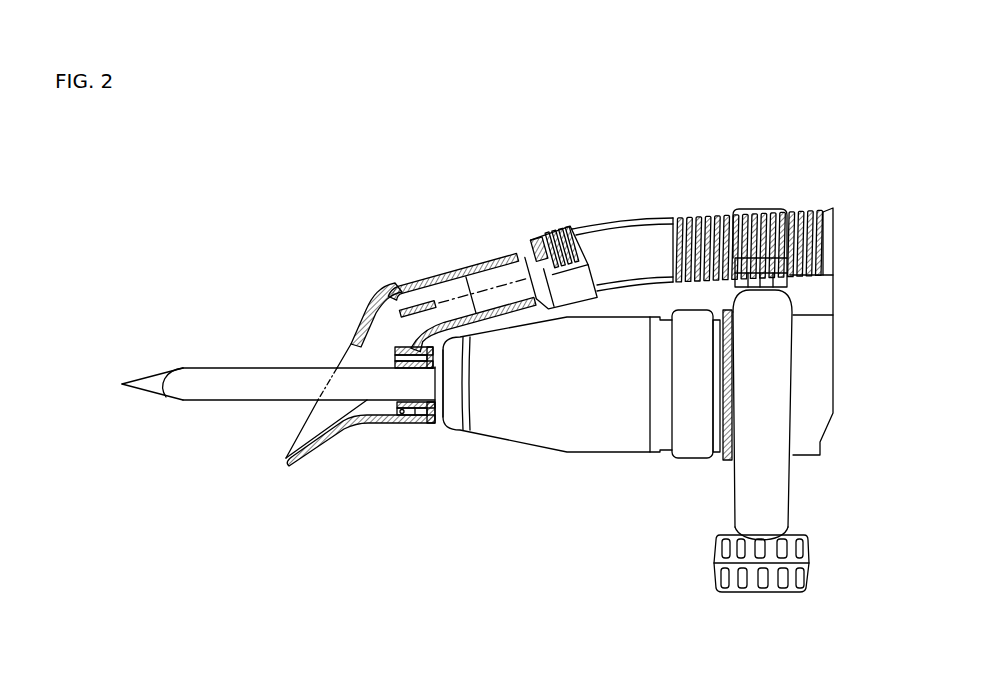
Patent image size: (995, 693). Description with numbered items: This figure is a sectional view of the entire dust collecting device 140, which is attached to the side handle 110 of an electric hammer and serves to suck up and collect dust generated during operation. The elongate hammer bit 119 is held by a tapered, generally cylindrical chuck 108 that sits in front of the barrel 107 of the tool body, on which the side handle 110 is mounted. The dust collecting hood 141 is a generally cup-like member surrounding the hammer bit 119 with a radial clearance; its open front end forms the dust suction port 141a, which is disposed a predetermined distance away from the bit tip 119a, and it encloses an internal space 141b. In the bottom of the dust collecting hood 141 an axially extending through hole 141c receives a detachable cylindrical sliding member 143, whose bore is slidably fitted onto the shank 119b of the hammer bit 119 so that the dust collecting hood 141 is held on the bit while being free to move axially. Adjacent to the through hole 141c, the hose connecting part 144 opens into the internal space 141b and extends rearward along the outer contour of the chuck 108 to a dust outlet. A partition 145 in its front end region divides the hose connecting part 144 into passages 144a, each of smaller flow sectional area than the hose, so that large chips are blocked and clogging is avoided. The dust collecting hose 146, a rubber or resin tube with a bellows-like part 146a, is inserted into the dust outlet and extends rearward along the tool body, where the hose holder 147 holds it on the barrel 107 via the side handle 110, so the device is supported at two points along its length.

The barrel 107 is at (822, 445).
The chuck 108 is at (572, 449).
The side handle 110 is at (737, 493).
The hammer bit 119 is at (210, 366).
The bit tip 119a is at (158, 388).
The shank 119b is at (294, 376).
The dust collecting device 140 is at (537, 203).
The dust collecting hood 141 is at (311, 458).
The dust suction port 141a is at (300, 431).
The internal space 141b is at (372, 341).
The through hole 141c is at (398, 420).
The cylindrical sliding member 143 is at (411, 409).
The hose connecting part 144 is at (461, 268).
The passages 144a is at (410, 327).
The partition 145 is at (414, 300).
The dust collecting hose 146 is at (637, 217).
The bellows-like part 146a is at (713, 216).
The hose holder 147 is at (765, 210).